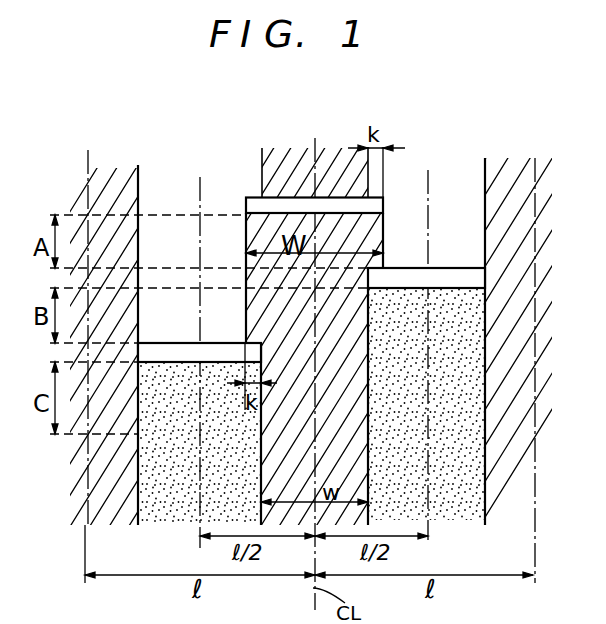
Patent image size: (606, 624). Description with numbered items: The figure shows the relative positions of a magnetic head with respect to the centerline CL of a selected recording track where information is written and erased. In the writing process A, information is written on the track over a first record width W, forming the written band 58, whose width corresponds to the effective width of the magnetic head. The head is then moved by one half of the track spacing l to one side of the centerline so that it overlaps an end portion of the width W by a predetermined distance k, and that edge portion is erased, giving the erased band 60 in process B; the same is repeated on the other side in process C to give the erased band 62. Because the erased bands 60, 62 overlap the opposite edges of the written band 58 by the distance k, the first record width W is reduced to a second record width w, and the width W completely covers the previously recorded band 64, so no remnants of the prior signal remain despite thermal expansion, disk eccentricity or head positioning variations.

The written band 58 is at (361, 235).
The erased band 60 is at (462, 429).
The erased band 62 is at (176, 487).
The previously recorded band 64 is at (287, 168).